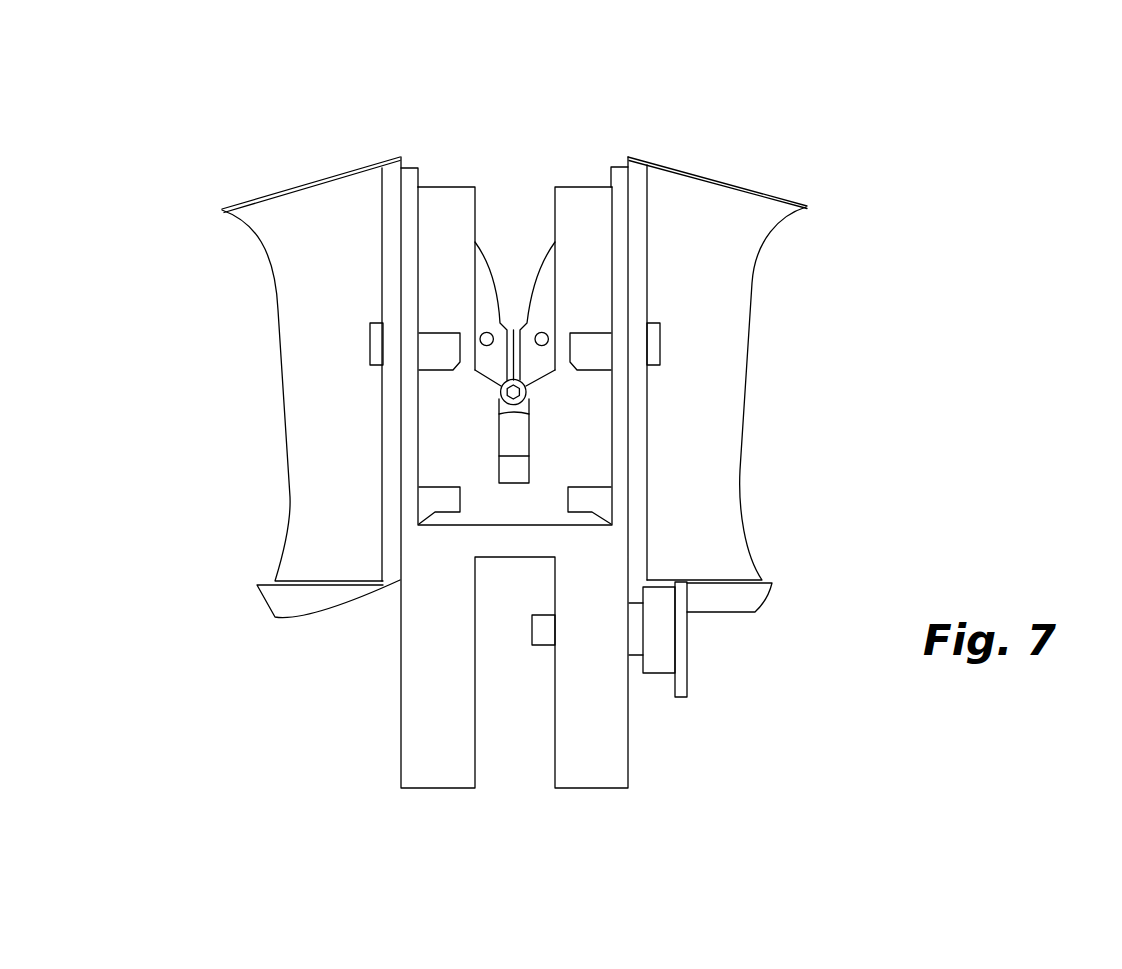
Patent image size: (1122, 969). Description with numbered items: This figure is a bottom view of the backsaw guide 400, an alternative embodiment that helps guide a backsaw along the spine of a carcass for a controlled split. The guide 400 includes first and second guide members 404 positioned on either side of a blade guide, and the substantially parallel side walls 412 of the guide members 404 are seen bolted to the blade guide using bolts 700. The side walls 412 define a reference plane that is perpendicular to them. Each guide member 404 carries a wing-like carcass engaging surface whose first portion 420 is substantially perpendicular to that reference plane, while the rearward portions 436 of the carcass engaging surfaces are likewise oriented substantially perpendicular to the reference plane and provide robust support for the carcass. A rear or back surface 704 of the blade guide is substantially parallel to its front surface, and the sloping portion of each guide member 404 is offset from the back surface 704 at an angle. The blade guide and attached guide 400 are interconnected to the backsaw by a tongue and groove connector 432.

The backsaw guide 400 is at (819, 175).
The guide member 404 is at (286, 458).
The side wall 412 is at (393, 193).
The first portion 420 is at (295, 185).
The tongue and groove connector 432 is at (419, 790).
The rearward portion 436 is at (350, 603).
The bolt 700 is at (368, 345).
The back surface 704 is at (410, 185).